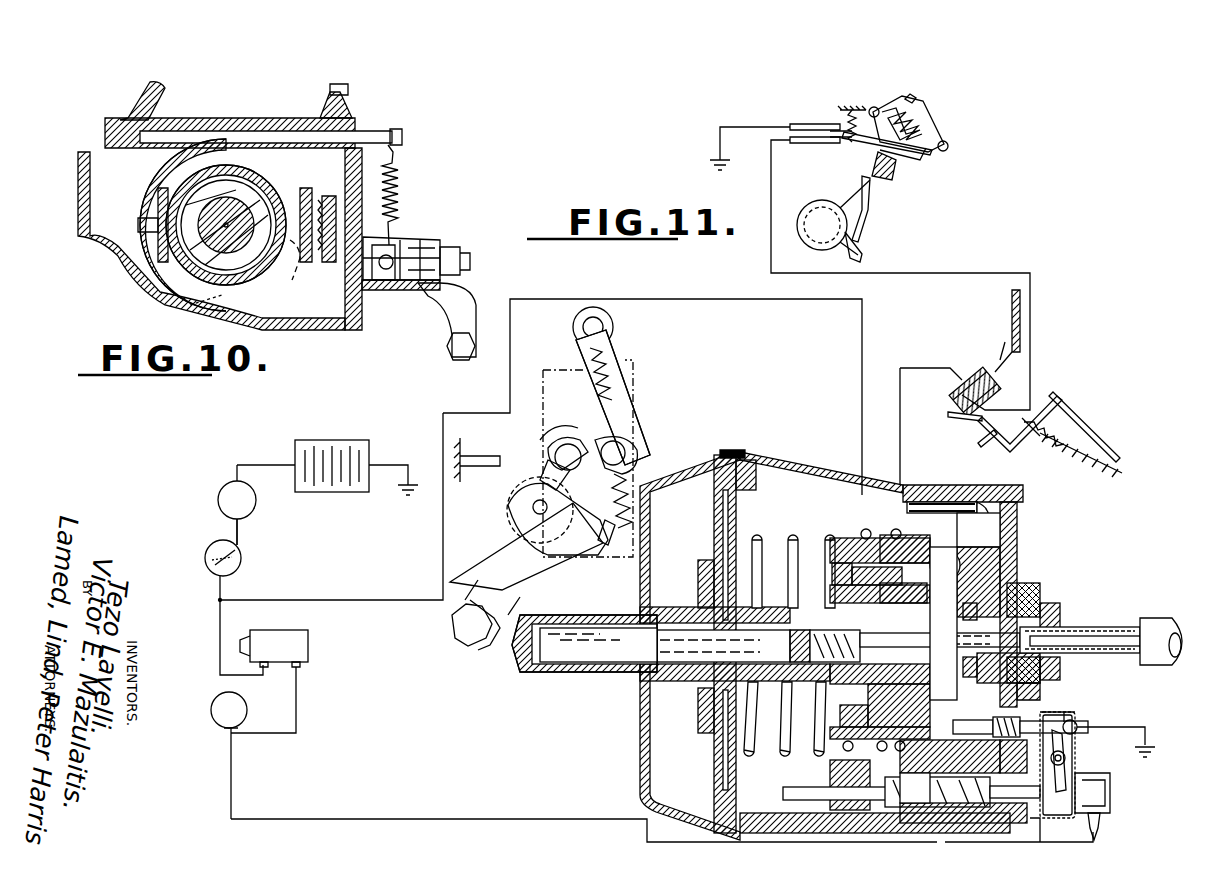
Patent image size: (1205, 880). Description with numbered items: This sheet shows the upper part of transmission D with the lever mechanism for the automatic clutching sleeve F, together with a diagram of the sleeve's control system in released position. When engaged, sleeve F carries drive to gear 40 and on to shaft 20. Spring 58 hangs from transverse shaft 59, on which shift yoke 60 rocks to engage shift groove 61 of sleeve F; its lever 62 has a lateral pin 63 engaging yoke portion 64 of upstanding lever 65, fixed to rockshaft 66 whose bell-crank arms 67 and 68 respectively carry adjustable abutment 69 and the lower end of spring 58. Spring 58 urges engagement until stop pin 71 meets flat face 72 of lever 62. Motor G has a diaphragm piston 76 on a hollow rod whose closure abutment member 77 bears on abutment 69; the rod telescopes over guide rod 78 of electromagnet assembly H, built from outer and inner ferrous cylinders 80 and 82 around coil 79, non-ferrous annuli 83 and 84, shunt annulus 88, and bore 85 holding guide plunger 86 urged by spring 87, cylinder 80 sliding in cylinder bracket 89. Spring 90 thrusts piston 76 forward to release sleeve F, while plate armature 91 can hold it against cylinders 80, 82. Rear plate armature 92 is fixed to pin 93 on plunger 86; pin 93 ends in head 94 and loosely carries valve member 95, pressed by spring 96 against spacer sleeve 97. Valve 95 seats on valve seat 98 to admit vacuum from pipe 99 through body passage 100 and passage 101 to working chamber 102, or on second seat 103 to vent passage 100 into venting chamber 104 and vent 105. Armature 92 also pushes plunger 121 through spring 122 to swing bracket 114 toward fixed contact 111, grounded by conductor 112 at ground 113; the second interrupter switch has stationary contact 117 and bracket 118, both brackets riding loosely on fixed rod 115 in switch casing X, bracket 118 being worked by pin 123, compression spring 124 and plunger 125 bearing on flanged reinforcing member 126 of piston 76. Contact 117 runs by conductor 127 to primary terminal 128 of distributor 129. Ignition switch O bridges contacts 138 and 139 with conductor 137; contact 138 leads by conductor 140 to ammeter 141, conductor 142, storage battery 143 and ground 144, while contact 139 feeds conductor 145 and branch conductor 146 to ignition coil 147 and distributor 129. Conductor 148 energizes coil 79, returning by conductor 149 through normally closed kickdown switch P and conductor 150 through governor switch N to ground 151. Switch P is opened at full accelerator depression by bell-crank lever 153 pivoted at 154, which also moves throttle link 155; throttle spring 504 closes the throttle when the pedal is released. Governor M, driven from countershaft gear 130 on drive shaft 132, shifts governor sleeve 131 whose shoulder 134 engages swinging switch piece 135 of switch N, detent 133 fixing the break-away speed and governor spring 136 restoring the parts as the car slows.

In FIG. 10, the mounting lug D is at (152, 88).
In FIG. 10, the housing 40 is at (160, 262).
In FIG. 10, the pivot bolt 59 is at (380, 130).
In FIG. 11, the pivot bolt 59 is at (608, 322).
In FIG. 10, the spring 58 is at (408, 186).
In FIG. 11, the spring 58 is at (636, 340).
In FIG. 10, the lever 60 is at (150, 192).
In FIG. 11, the lever 60 is at (575, 345).
In FIG. 10, the hub ring 61 is at (195, 280).
In FIG. 10, the shaft 20 is at (240, 270).
In FIG. 10, the plate 63 is at (325, 205).
In FIG. 11, the plate 63 is at (545, 470).
In FIG. 10, the toothed member 65 is at (332, 262).
In FIG. 11, the toothed member 65 is at (628, 436).
In FIG. 10, the pin 71 is at (302, 264).
In FIG. 11, the pin 71 is at (494, 452).
In FIG. 10, the cam 66 is at (360, 280).
In FIG. 11, the cam 66 is at (520, 500).
In FIG. 10, the roller 68 is at (412, 292).
In FIG. 11, the roller 68 is at (598, 548).
In FIG. 10, the arm 67 is at (462, 300).
In FIG. 11, the arm 67 is at (485, 560).
In FIG. 10, the bolt 69 is at (450, 352).
In FIG. 11, the bolt 69 is at (482, 648).
In FIG. 10, the frame F is at (198, 305).
In FIG. 11, the frame F is at (640, 380).
In FIG. 11, the relay magnet M is at (932, 122).
In FIG. 11, the coil spring 136 is at (940, 128).
In FIG. 11, the contacts 135 is at (852, 142).
In FIG. 11, the contact carrier N is at (830, 140).
In FIG. 11, the armature 131 is at (934, 156).
In FIG. 11, the link 134 is at (918, 168).
In FIG. 11, the block 133 is at (900, 178).
In FIG. 11, the rod 132 is at (888, 212).
In FIG. 11, the shaft collar 130 is at (822, 200).
In FIG. 11, the ground 151 is at (712, 164).
In FIG. 11, the wire 150 is at (992, 275).
In FIG. 11, the wire 149 is at (945, 366).
In FIG. 11, the relay P is at (972, 368).
In FIG. 11, the rod 153 is at (960, 417).
In FIG. 11, the lever 154 is at (984, 425).
In FIG. 11, the link 155 is at (990, 440).
In FIG. 11, the spring 122 is at (1030, 440).
In FIG. 11, the spring 504 is at (1090, 430).
In FIG. 11, the wire 148 is at (388, 600).
In FIG. 11, the lamp 141 is at (218, 500).
In FIG. 11, the wire 142 is at (276, 465).
In FIG. 11, the battery 143 is at (332, 486).
In FIG. 11, the ground 144 is at (406, 498).
In FIG. 11, the wire 140 is at (225, 528).
In FIG. 11, the switch O is at (204, 552).
In FIG. 11, the switch blade 138 is at (240, 550).
In FIG. 11, the contact 137 is at (242, 555).
In FIG. 11, the wire 139 is at (210, 568).
In FIG. 11, the junction 145 is at (228, 578).
In FIG. 11, the wire 146 is at (220, 628).
In FIG. 11, the solenoid 147 is at (300, 642).
In FIG. 11, the lamp 129 is at (218, 695).
In FIG. 11, the wire 128 is at (224, 732).
In FIG. 11, the wire 127 is at (455, 819).
In FIG. 11, the link 62 is at (580, 420).
In FIG. 11, the arm 64 is at (550, 425).
In FIG. 11, the pivot pin 72 is at (540, 498).
In FIG. 11, the servo casing 76 is at (705, 522).
In FIG. 11, the diaphragm plate 78 is at (776, 660).
In FIG. 11, the seal 91 is at (710, 568).
In FIG. 11, the cover 102 is at (768, 458).
In FIG. 11, the valve housing G is at (786, 480).
In FIG. 11, the boss 90 is at (786, 520).
In FIG. 11, the chamber H is at (848, 545).
In FIG. 11, the hub plate 84 is at (890, 606).
In FIG. 11, the pins 80 is at (808, 560).
In FIG. 11, the valve block 79 is at (884, 560).
In FIG. 11, the valve seat 88 is at (838, 570).
In FIG. 11, the valve 82 is at (838, 592).
In FIG. 11, the valve body 83 is at (880, 698).
In FIG. 11, the piston rod 87 is at (790, 644).
In FIG. 11, the spring 85 is at (812, 662).
In FIG. 11, the rod 86 is at (916, 642).
In FIG. 11, the rod housing 77 is at (520, 660).
In FIG. 11, the base plate 126 is at (740, 780).
In FIG. 11, the block 89 is at (838, 770).
In FIG. 11, the plunger 125 is at (866, 804).
In FIG. 11, the housing wall 100 is at (1018, 508).
In FIG. 11, the passage 101 is at (918, 500).
In FIG. 11, the port 104 is at (950, 498).
In FIG. 11, the stem 105 is at (980, 527).
In FIG. 11, the bore 92 is at (973, 550).
In FIG. 11, the wall 97 is at (985, 620).
In FIG. 11, the bearing 95 is at (975, 605).
In FIG. 11, the sleeve 98 is at (1025, 600).
In FIG. 11, the bearing block 93 is at (1030, 592).
In FIG. 11, the flange 96 is at (1048, 606).
In FIG. 11, the output rod 94 is at (1035, 628).
In FIG. 11, the rod 99 is at (1110, 630).
In FIG. 11, the flange 103 is at (1042, 676).
In FIG. 11, the rod 121 is at (976, 726).
In FIG. 11, the rod 111 is at (1080, 722).
In FIG. 11, the pin 114 is at (1066, 714).
In FIG. 11, the wire 112 is at (1114, 725).
In FIG. 11, the ground 113 is at (1140, 760).
In FIG. 11, the bracket X is at (1052, 818).
In FIG. 11, the lever 115 is at (1068, 740).
In FIG. 11, the nut 117 is at (1066, 768).
In FIG. 11, the block 118 is at (1014, 758).
In FIG. 11, the block 124 is at (940, 780).
In FIG. 11, the chamber 123 is at (958, 776).